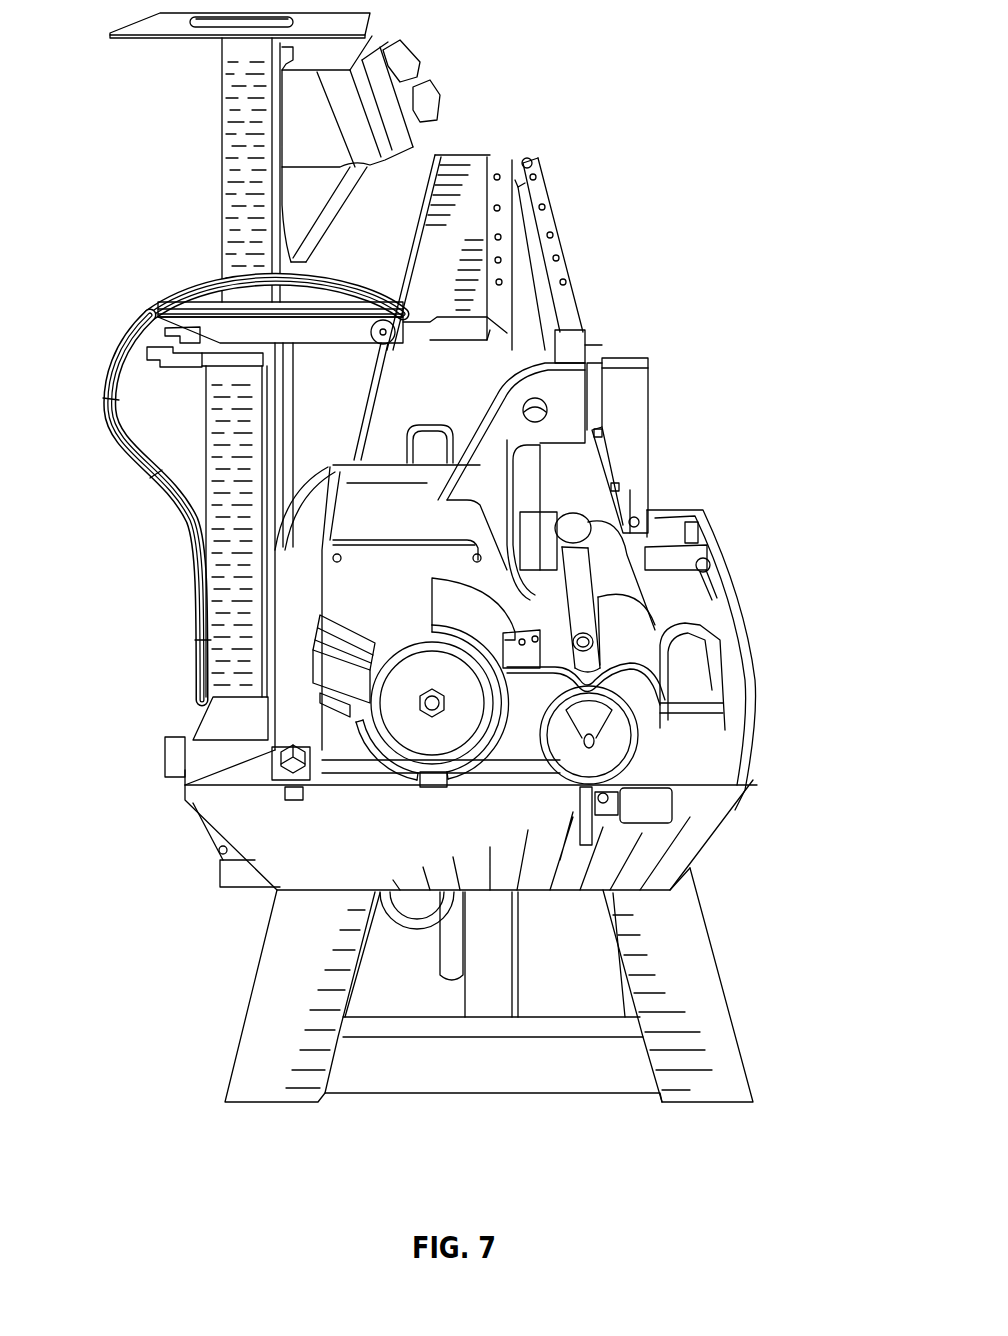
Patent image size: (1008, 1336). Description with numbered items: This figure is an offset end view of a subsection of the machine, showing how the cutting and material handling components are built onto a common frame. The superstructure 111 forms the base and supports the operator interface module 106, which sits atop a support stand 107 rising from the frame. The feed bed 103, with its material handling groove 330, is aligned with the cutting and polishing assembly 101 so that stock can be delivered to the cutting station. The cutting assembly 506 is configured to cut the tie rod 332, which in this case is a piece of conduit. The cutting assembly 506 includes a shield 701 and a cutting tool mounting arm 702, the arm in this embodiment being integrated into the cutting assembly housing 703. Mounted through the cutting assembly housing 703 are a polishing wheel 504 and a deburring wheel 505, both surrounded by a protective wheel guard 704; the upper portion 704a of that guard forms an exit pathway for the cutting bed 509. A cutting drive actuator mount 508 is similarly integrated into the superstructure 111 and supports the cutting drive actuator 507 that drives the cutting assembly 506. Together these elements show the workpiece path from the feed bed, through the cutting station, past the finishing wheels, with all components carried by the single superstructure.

The cutting and polishing assembly 101 is at (782, 469).
The feed bed 103 is at (467, 175).
The operator interface module 106 is at (152, 93).
The support stand 107 is at (243, 207).
The superstructure 111 is at (477, 1097).
The material handling groove 330 is at (515, 218).
The tie rod 332 is at (575, 582).
The polishing wheel 504 is at (415, 728).
The deburring wheel 505 is at (612, 742).
The cutting assembly 506 is at (590, 383).
The cutting drive actuator 507 is at (320, 305).
The cutting drive actuator mount 508 is at (225, 414).
The cutting bed 509 is at (623, 570).
The shield 701 is at (648, 428).
The cutting tool mounting arm 702 is at (508, 408).
The cutting assembly housing 703 is at (332, 537).
The protective wheel guard 704 is at (350, 693).
The upper portion of the protective wheel guard 704a is at (642, 684).